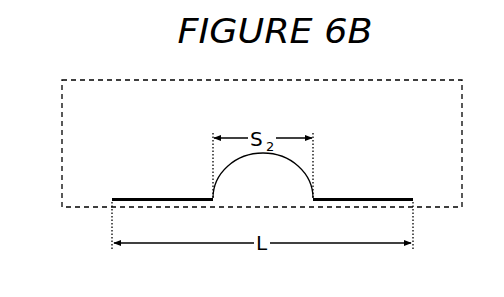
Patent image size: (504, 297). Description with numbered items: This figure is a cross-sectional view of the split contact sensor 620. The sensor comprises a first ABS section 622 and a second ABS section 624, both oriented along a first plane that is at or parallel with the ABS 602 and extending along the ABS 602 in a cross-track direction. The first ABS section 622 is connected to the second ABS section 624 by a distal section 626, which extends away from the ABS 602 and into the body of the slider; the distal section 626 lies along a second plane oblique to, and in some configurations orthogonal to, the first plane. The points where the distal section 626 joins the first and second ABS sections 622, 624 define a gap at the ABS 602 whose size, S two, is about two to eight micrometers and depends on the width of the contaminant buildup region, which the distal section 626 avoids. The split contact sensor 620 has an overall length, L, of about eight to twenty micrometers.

The ABS 602 is at (85, 208).
The split contact sensor 620 is at (262, 145).
The first ABS section 622 is at (155, 198).
The second ABS section 624 is at (373, 198).
The distal section 626 is at (221, 168).